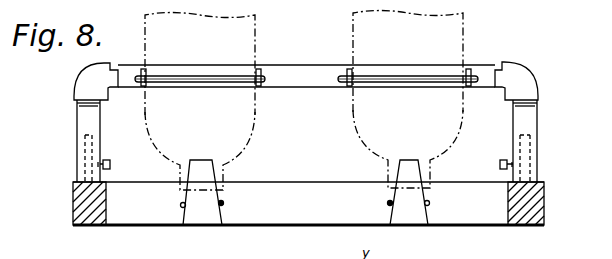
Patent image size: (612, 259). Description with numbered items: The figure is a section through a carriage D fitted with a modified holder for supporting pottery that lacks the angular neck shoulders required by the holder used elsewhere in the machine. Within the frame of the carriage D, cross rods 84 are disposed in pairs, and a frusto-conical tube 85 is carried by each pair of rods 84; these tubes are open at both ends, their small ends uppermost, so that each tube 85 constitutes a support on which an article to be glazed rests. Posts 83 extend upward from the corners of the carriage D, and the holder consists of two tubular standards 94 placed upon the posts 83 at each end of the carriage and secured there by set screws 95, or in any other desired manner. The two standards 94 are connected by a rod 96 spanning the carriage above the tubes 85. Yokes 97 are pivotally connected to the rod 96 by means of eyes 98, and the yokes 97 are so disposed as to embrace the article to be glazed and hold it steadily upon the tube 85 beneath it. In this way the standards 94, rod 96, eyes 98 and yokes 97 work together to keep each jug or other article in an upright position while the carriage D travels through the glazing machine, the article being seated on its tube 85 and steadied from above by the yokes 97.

The post 83 is at (88, 148).
The cross rod 84 is at (224, 203).
The frusto-conical tube 85 is at (181, 206).
The tubular standard 94 is at (537, 127).
The set screw 95 is at (112, 168).
The rod 96 is at (304, 82).
The yoke 97 is at (211, 78).
The eye 98 is at (261, 70).
The carriage D is at (545, 205).